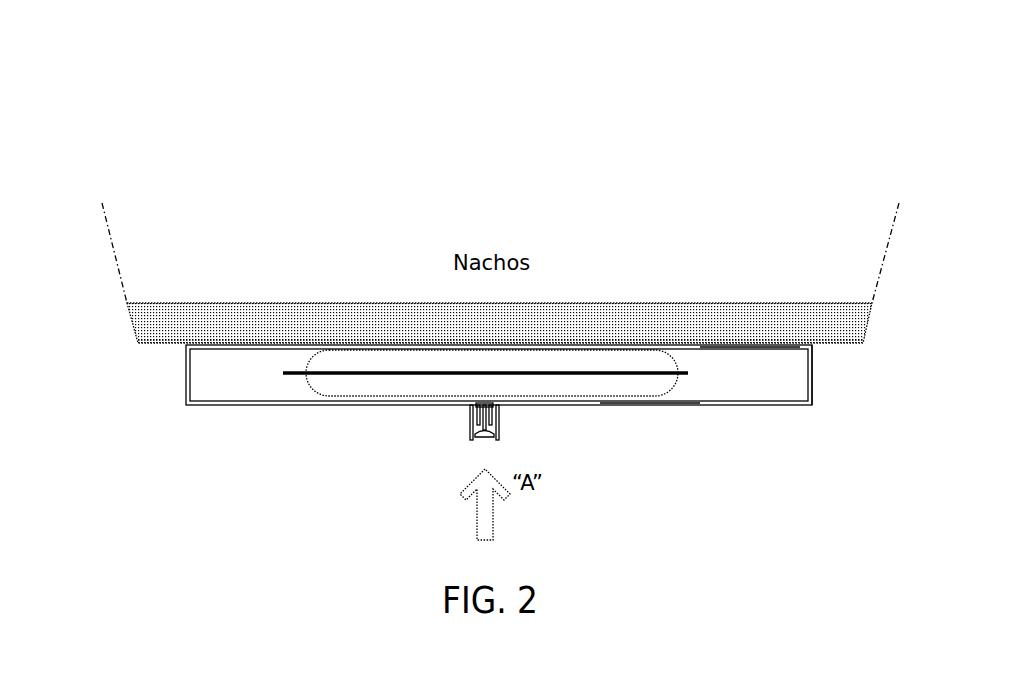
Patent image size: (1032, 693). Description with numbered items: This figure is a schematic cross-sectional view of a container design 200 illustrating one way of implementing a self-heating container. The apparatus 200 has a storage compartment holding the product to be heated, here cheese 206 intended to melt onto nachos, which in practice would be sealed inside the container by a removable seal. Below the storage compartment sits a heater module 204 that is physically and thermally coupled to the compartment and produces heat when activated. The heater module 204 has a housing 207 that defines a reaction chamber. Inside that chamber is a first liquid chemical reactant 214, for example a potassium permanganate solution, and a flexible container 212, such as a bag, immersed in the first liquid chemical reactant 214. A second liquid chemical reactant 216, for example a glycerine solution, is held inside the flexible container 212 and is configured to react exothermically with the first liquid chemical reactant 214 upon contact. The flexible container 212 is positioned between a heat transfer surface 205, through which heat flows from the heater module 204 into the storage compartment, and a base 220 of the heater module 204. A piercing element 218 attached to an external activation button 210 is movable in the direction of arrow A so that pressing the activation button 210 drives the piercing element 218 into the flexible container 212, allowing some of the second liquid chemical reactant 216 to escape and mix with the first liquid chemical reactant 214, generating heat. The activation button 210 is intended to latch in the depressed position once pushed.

The container design 200 is at (132, 108).
The heater module 204 is at (177, 370).
The heat transfer surface 205 is at (730, 348).
The cheese 206 is at (143, 330).
The housing 207 is at (813, 360).
The activation button 210 is at (483, 443).
The flexible container 212 is at (308, 386).
The first liquid chemical reactant 214 is at (633, 357).
The second liquid chemical reactant 216 is at (772, 382).
The piercing element 218 is at (483, 403).
The base 220 is at (656, 403).